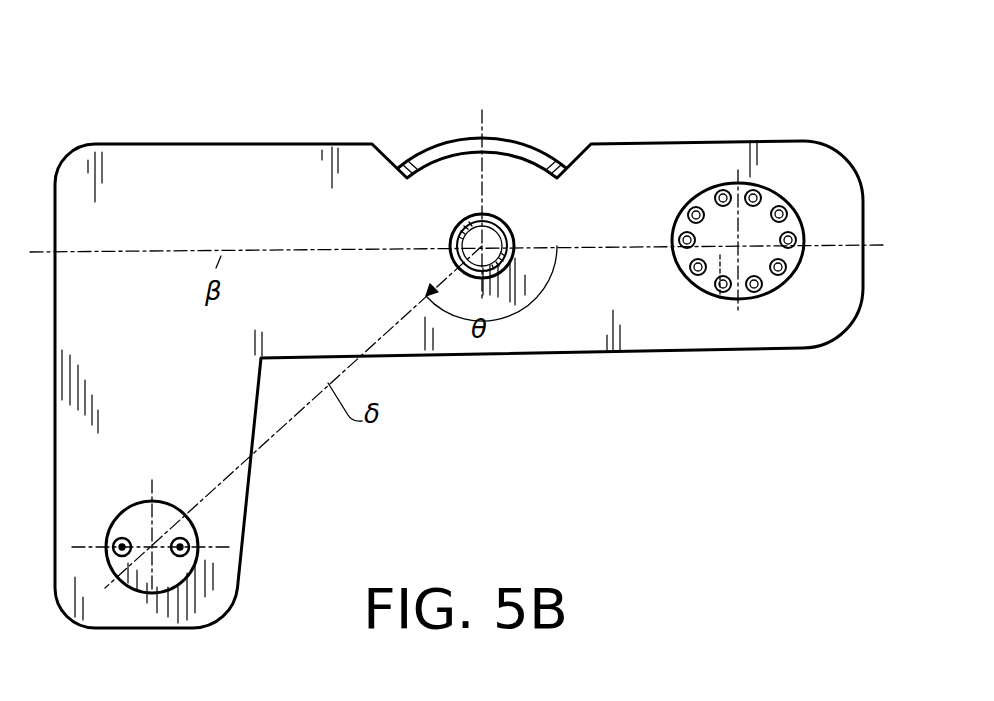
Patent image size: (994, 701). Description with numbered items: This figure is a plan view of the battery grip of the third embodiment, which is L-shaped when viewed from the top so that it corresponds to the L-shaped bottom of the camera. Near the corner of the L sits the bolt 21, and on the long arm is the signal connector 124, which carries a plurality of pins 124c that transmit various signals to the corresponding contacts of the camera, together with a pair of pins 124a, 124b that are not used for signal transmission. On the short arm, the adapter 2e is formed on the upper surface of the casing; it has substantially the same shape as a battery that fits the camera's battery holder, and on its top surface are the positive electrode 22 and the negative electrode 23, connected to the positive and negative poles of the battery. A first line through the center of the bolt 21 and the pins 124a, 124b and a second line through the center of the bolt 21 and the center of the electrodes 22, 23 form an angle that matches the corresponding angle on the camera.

The bolt 21 is at (456, 231).
The positive electrode 22 is at (119, 537).
The negative electrode 23 is at (185, 538).
The adapter 2e is at (150, 500).
The signal connector 124 is at (677, 217).
The pin 124a is at (833, 217).
The pin 124b is at (686, 244).
The pins 124c is at (675, 173).